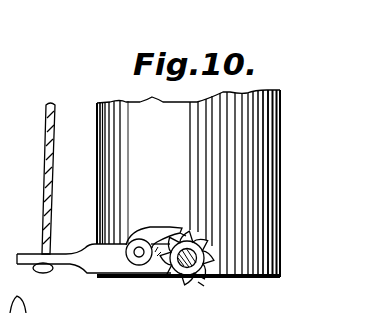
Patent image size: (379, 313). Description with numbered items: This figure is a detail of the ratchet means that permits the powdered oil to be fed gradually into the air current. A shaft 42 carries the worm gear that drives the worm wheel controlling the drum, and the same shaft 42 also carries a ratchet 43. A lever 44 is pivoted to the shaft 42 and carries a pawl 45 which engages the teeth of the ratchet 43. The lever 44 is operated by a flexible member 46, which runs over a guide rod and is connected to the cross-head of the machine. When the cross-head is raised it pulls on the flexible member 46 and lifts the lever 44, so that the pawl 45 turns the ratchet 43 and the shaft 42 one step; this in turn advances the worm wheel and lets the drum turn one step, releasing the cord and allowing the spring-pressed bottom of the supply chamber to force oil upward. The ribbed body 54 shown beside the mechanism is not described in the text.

The shaft 42 is at (171, 277).
The ratchet 43 is at (199, 283).
The lever 44 is at (87, 266).
The pawl 45 is at (158, 227).
The flexible member 46 is at (46, 105).
The cylinder 54 is at (281, 172).